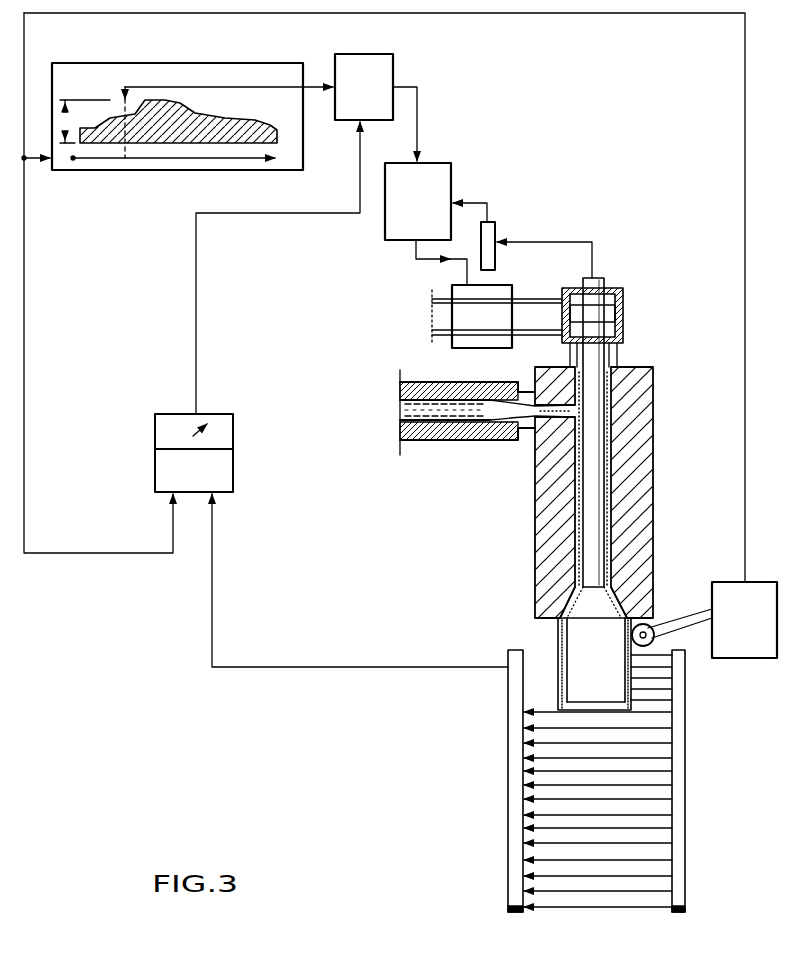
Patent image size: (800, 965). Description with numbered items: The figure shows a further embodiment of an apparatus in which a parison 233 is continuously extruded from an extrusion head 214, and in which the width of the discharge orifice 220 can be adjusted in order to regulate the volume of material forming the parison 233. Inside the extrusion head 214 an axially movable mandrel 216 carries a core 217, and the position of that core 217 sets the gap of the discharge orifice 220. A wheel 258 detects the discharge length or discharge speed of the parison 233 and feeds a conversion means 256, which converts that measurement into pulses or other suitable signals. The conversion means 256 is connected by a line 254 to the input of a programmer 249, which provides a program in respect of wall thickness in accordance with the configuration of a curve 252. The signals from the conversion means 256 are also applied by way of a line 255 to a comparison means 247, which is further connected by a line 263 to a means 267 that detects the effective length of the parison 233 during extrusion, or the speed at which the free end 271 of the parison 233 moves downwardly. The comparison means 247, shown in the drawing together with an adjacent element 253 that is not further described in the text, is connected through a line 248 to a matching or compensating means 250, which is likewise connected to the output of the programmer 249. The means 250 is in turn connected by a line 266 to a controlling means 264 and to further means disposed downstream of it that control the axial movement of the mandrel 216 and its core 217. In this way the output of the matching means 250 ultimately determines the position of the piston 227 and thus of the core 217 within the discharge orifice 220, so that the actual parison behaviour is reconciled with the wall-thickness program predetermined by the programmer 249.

The extrusion head 214 is at (663, 424).
The mandrel 216 is at (595, 494).
The core 217 is at (578, 602).
The discharge orifice 220 is at (655, 570).
The piston 227 is at (622, 308).
The parison 233 is at (558, 648).
The comparison means 247 is at (233, 467).
The line 248 is at (197, 313).
The programmer 249 is at (172, 172).
The matching or compensating means 250 is at (390, 63).
The curve 252 is at (212, 114).
The adjusting element 253 is at (233, 428).
The line 254 is at (745, 172).
The line 255 is at (25, 344).
The conversion means 256 is at (746, 648).
The wheel 258 is at (655, 613).
The line 263 is at (330, 662).
The controlling means 264 is at (451, 176).
The line 266 is at (420, 127).
The means for detecting effective parison length 267 is at (500, 830).
The free end of the parison 271 is at (597, 713).